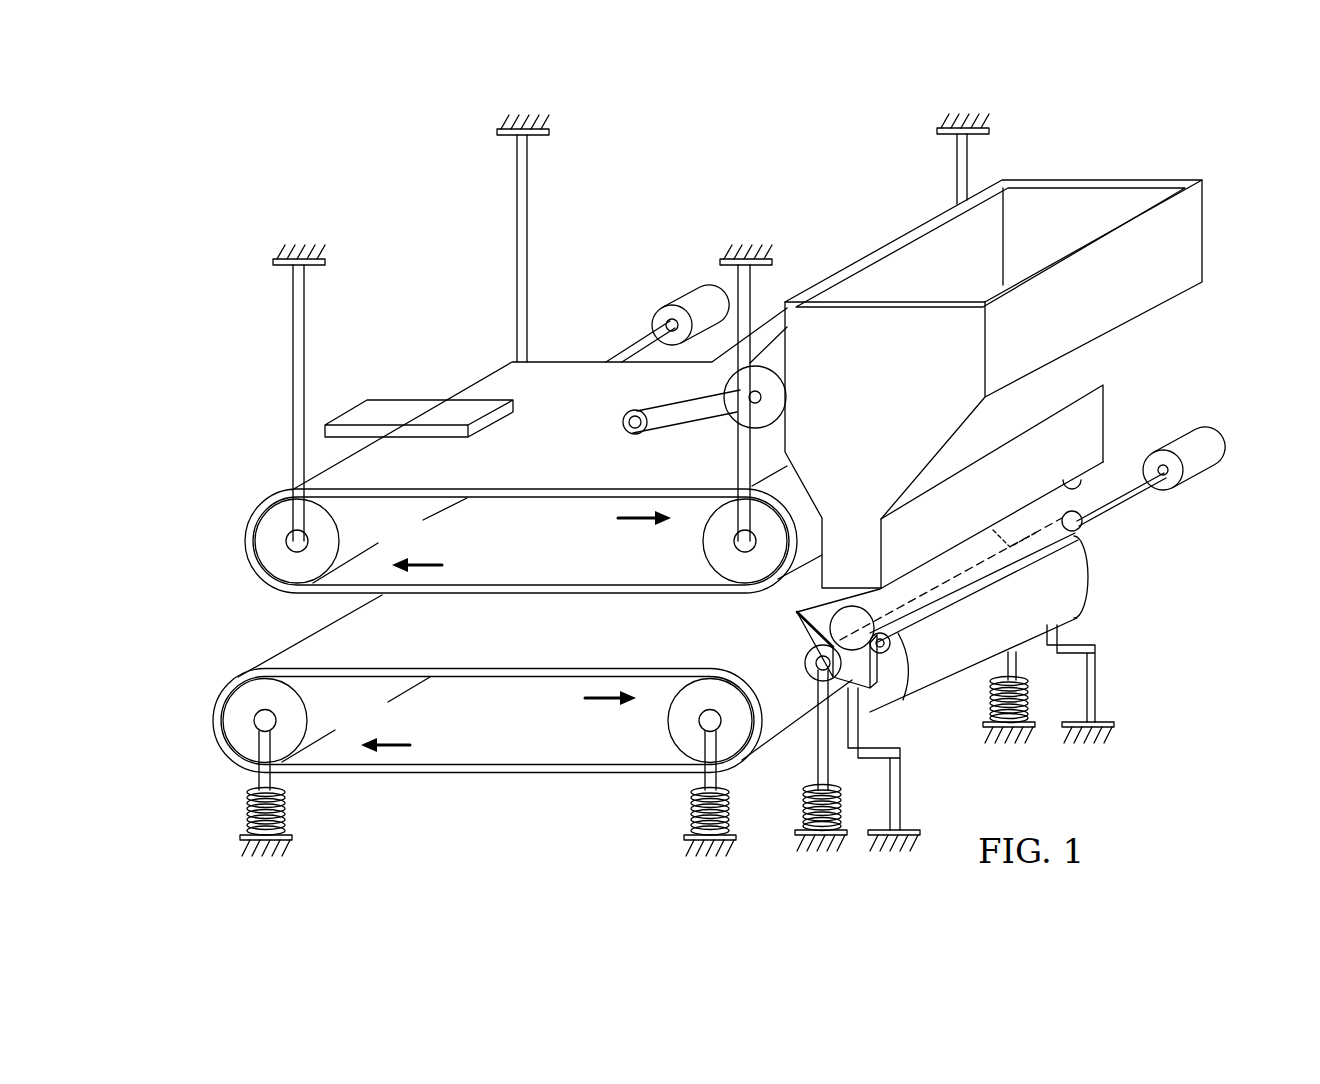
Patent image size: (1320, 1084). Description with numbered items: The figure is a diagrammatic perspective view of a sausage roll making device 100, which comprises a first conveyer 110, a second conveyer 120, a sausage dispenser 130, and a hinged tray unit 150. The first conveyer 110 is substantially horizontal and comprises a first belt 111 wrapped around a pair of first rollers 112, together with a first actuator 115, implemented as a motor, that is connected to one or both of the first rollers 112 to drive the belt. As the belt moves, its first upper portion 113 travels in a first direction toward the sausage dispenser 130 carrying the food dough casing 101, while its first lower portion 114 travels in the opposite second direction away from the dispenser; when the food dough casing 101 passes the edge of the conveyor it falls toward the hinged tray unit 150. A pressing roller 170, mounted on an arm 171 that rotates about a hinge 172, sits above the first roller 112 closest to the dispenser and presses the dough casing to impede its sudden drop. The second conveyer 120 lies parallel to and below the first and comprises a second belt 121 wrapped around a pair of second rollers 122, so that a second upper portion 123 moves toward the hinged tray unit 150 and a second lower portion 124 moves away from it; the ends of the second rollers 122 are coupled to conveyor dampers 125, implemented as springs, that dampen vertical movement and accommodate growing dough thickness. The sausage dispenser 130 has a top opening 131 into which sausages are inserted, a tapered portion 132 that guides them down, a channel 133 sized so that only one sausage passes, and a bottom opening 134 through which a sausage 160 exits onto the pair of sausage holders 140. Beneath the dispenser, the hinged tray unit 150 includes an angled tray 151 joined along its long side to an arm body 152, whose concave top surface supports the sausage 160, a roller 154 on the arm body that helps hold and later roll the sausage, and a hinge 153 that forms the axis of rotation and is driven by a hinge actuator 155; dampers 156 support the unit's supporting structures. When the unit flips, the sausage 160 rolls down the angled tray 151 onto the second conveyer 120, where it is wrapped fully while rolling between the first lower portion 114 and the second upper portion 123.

The sausage roll making device 100 is at (402, 197).
The food dough casing 101 is at (398, 408).
The first conveyer 110 is at (496, 492).
The first belt 111 is at (481, 372).
The first rollers 112 is at (343, 543).
The first upper portion 113 is at (578, 366).
The first lower portion 114 is at (520, 597).
The first actuator 115 is at (682, 297).
The second conveyer 120 is at (493, 741).
The second belt 121 is at (781, 732).
The second rollers 122 is at (310, 722).
The second upper portion 123 is at (318, 642).
The second lower portion 124 is at (488, 773).
The conveyor dampers 125 is at (245, 810).
The sausage dispenser 130 is at (1034, 354).
The top opening 131 is at (1047, 193).
The tapered portion 132 is at (1213, 228).
The channel 133 is at (1103, 420).
The bottom opening 134 is at (1072, 473).
The sausage holders 140 is at (880, 672).
The hinged tray unit 150 is at (1007, 639).
The angled tray 151 is at (812, 605).
The arm body 152 is at (1075, 597).
The hinge 153 is at (807, 658).
The roller 154 is at (893, 657).
The hinge actuator 155 is at (1213, 448).
The dampers 156 is at (842, 810).
The sausage 160 is at (1072, 501).
The pressing roller 170 is at (783, 385).
The arm 171 is at (687, 412).
The hinge 172 is at (672, 397).